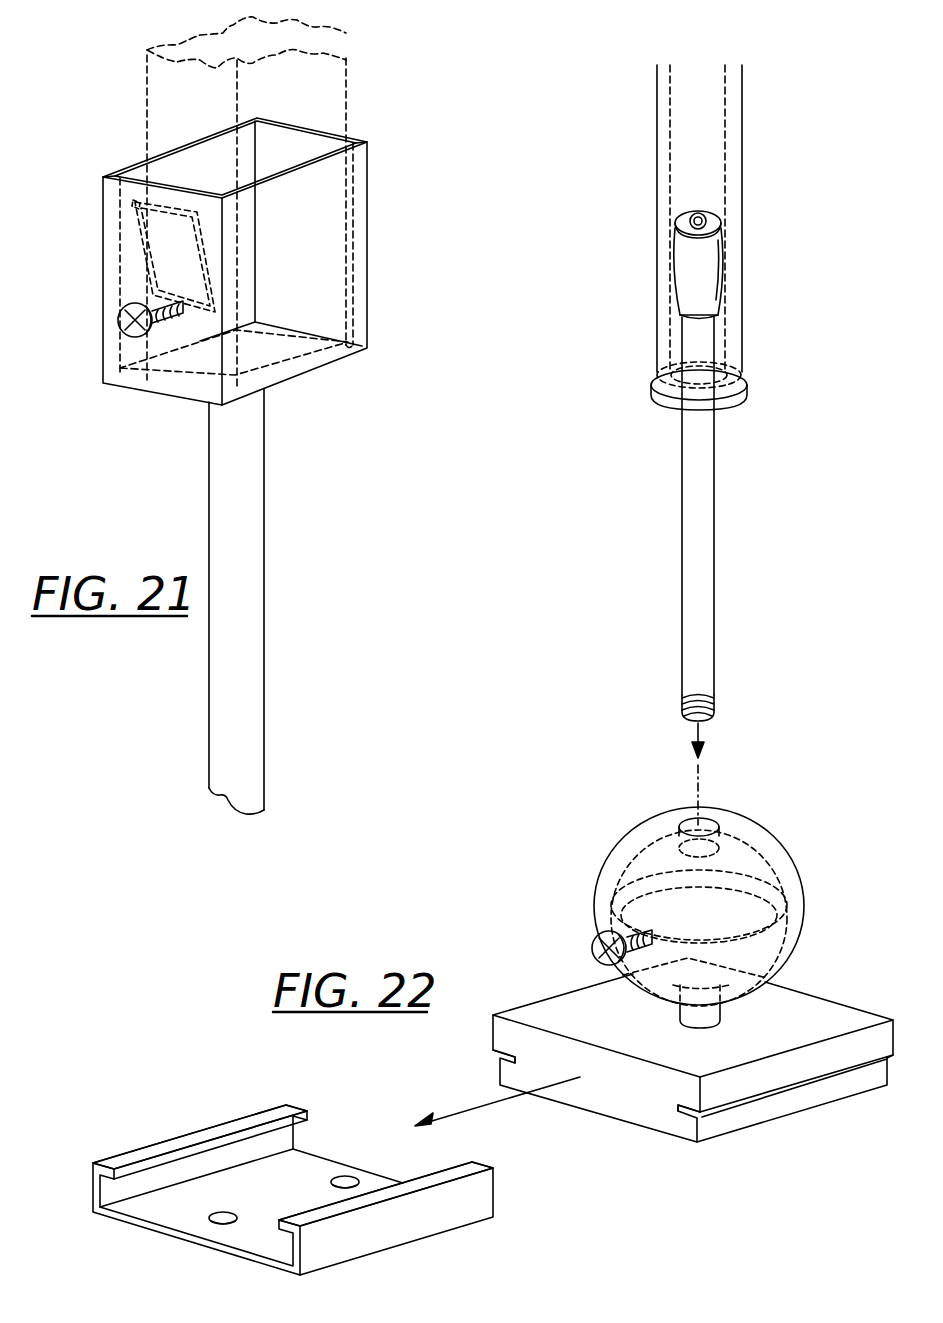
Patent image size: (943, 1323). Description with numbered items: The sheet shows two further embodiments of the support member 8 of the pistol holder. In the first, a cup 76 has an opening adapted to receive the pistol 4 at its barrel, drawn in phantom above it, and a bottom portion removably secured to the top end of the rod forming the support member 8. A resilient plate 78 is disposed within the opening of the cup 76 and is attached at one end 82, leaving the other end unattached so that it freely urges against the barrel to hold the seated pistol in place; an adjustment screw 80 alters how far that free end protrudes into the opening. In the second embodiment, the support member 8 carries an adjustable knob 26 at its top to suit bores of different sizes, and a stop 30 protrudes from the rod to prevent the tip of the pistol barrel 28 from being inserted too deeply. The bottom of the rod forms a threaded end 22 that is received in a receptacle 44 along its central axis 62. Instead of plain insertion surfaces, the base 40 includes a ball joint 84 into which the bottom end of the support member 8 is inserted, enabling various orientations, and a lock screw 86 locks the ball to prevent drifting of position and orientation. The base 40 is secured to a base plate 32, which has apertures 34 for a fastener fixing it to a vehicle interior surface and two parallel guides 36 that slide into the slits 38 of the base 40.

In FIG. 21, the pistol 4 is at (337, 61).
In FIG. 22, the pistol 4 is at (656, 185).
In FIG. 21, the support member 8 is at (214, 471).
In FIG. 22, the support member 8 is at (687, 547).
In FIG. 21, the cup 76 is at (358, 176).
In FIG. 21, the resilient plate 78 is at (162, 242).
In FIG. 21, the adjustment screw 80 is at (122, 317).
In FIG. 21, the end of resilient plate 82 is at (141, 195).
In FIG. 22, the adjustable knob 26 is at (684, 266).
In FIG. 22, the tip of pistol barrel 28 is at (652, 347).
In FIG. 22, the stop 30 is at (652, 384).
In FIG. 22, the threaded end 22 is at (682, 676).
In FIG. 22, the receptacle 44 is at (684, 818).
In FIG. 22, the central axis 62 is at (703, 776).
In FIG. 22, the ball joint 84 is at (630, 847).
In FIG. 22, the lock screw 86 is at (594, 948).
In FIG. 22, the base 40 is at (549, 1011).
In FIG. 22, the slit 38 is at (497, 1057).
In FIG. 22, the base plate 32 is at (316, 1161).
In FIG. 22, the aperture 34 is at (348, 1176).
In FIG. 22, the guide 36 is at (288, 1106).